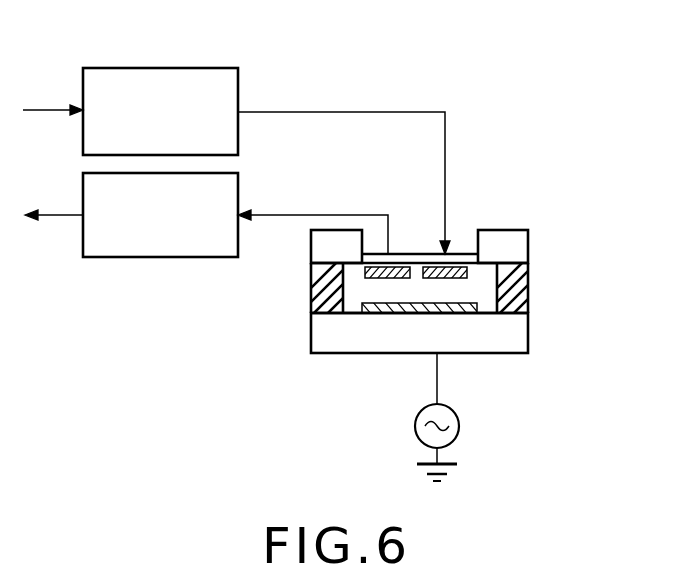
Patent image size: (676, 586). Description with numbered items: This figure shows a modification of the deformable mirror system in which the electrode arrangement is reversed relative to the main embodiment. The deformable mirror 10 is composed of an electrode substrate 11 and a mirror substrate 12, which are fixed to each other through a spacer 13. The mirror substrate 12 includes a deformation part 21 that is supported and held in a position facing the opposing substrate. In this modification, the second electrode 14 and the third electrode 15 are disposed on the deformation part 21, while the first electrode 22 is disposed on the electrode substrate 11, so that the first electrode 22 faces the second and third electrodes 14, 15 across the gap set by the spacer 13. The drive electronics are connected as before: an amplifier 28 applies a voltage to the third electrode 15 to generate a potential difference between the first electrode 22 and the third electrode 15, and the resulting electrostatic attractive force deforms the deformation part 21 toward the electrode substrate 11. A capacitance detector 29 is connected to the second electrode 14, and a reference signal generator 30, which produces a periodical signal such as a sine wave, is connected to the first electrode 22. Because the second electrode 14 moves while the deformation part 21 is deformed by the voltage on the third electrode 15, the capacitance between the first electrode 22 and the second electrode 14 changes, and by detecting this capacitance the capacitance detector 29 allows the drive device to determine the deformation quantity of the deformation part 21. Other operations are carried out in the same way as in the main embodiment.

The deformable mirror 10 is at (475, 274).
The electrode substrate 11 is at (520, 332).
The mirror substrate 12 is at (520, 248).
The spacer 13 is at (520, 292).
The second electrode 14 is at (404, 256).
The third electrode 15 is at (457, 262).
The deformation part 21 is at (398, 243).
The first electrode 22 is at (452, 303).
The amplifier 28 is at (190, 68).
The capacitance detector 29 is at (183, 257).
The reference signal generator 30 is at (459, 427).